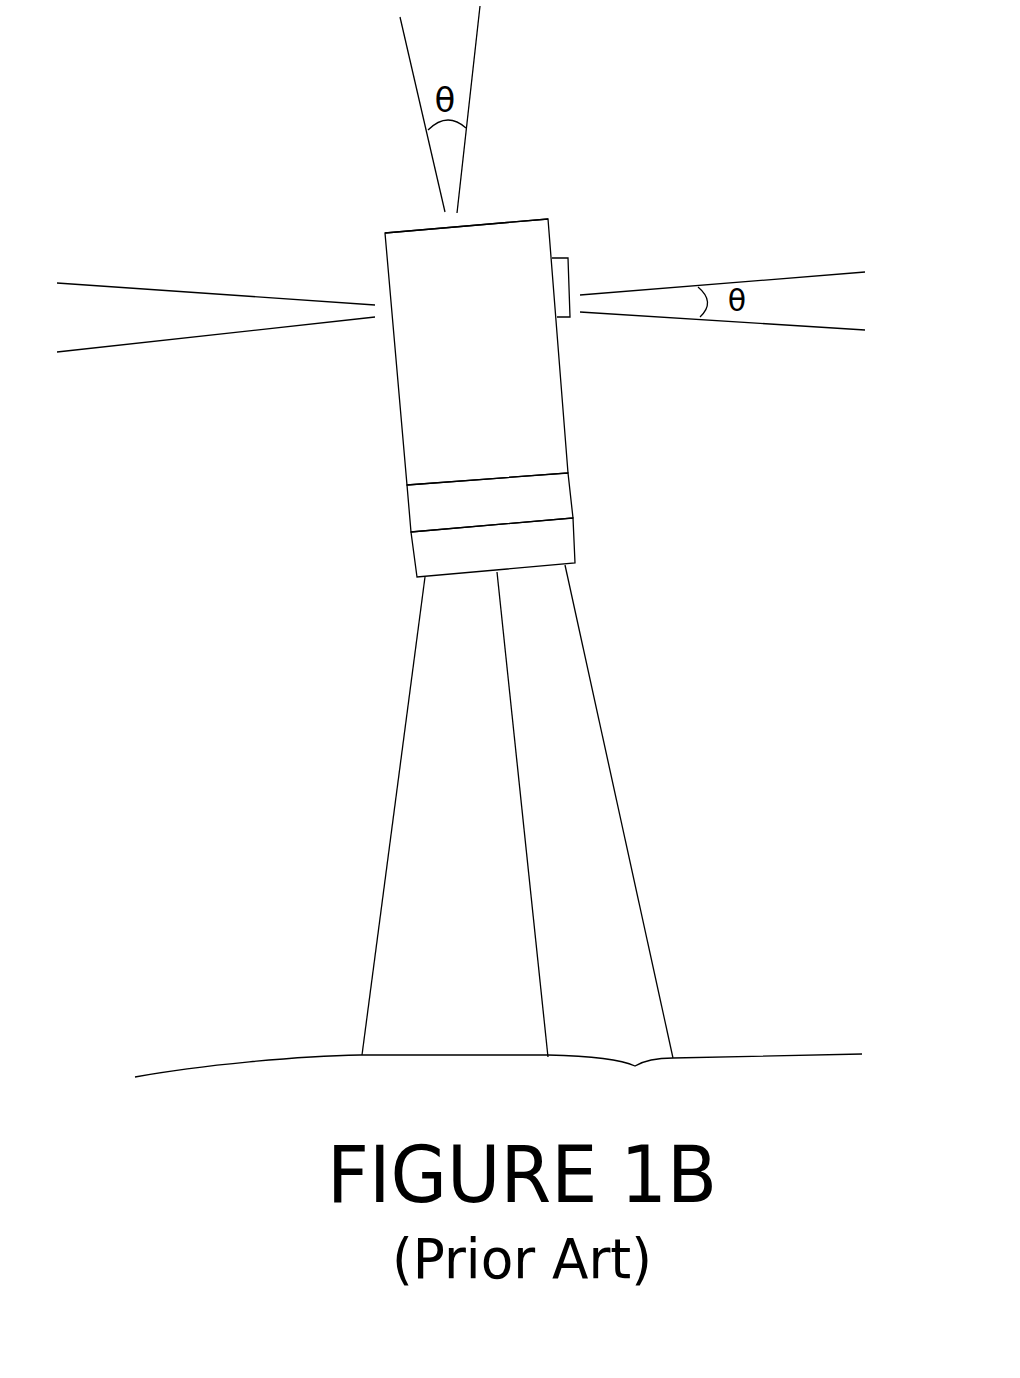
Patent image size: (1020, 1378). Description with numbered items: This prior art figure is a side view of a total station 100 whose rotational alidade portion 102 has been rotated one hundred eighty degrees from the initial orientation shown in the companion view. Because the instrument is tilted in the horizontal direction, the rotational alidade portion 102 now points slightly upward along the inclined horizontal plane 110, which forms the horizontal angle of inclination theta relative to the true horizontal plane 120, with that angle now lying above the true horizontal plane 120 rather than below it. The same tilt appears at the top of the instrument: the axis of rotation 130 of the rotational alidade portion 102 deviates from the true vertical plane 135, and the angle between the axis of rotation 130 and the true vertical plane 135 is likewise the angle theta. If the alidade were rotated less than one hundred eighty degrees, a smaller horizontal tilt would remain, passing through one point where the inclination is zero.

The total station 100 is at (373, 265).
The rotational alidade portion 102 is at (496, 234).
The inclined horizontal plane 110 is at (833, 260).
The true horizontal plane 120 is at (855, 318).
The axis of rotation of rotational alidade portion 130 is at (394, 57).
The true vertical plane 135 is at (491, 40).